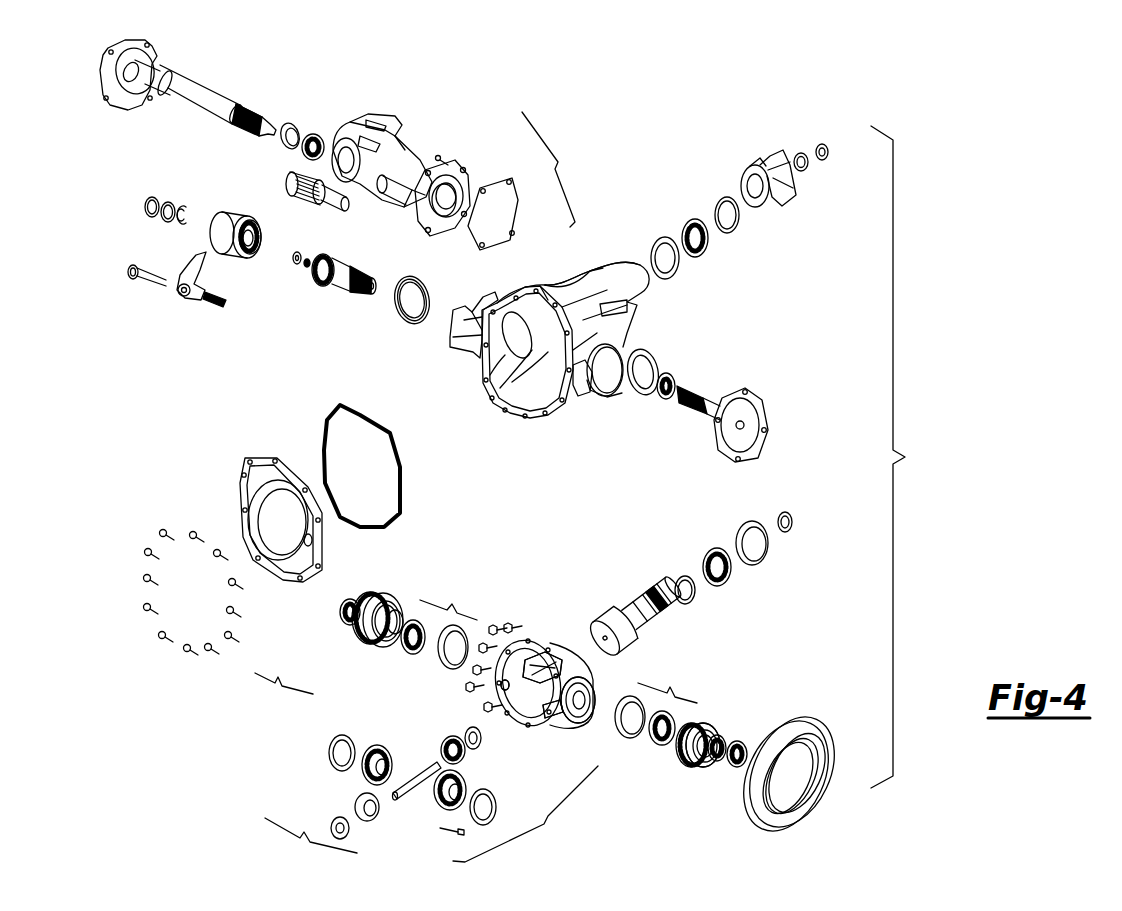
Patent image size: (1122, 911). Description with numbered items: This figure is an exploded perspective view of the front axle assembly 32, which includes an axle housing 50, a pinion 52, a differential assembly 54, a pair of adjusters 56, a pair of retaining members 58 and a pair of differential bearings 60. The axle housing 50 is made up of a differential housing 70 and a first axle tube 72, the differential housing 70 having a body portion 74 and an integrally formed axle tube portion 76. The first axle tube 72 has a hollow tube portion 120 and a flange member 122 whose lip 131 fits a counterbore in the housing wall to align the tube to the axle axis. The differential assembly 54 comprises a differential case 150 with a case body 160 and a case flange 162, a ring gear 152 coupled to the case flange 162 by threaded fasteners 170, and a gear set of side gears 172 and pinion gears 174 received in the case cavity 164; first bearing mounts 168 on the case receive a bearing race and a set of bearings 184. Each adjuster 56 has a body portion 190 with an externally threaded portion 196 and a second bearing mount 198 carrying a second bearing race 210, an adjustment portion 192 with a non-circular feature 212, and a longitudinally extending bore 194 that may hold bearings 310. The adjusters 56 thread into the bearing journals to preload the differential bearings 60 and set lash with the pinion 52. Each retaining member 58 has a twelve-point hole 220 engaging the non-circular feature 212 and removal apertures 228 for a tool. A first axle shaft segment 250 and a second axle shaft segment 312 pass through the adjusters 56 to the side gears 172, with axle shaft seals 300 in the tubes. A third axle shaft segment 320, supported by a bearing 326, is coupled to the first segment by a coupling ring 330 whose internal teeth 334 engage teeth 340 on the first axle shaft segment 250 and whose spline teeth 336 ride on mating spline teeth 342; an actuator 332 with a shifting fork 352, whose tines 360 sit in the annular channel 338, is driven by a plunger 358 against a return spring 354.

The front axle assembly 32 is at (902, 457).
The axle housing 50 is at (553, 169).
The pinion 52 is at (630, 652).
The differential assembly 54 is at (508, 708).
The adjusters 56 is at (394, 592).
The retaining members 58 is at (420, 290).
The differential bearings 60 is at (558, 660).
The differential housing 70 is at (565, 290).
The first axle tube 72 is at (422, 176).
The body portion 74 is at (606, 297).
The axle tube portion 76 is at (588, 385).
The tube portion 120 is at (390, 184).
The flange member 122 is at (458, 175).
The lip 131 is at (457, 214).
The differential case 150 is at (567, 660).
The ring gear 152 is at (816, 732).
The case body 160 is at (540, 714).
The case flange 162 is at (545, 642).
The case cavity 164 is at (503, 686).
The first bearing mounts 168 is at (587, 712).
The threaded fasteners 170 is at (505, 622).
The side gears 172 is at (364, 776).
The pinion gears 174 is at (356, 805).
The bearings 184 is at (380, 798).
The body portion 190 is at (281, 692).
The adjustment portion 192 is at (706, 780).
The longitudinally extending bore 194 is at (396, 642).
The externally threaded portion 196 is at (366, 628).
The second bearing mount 198 is at (378, 632).
The second bearing race 210 is at (440, 657).
The non-circular feature 212 is at (711, 734).
The twelve-point hole 220 is at (643, 394).
The removal apertures 228 is at (416, 322).
The first axle shaft segment 250 is at (346, 290).
The axle shaft seals 300 is at (286, 122).
The bearings 310 is at (338, 615).
The second axle shaft segment 312 is at (706, 406).
The third axle shaft segment 320 is at (217, 100).
The bearing 326 is at (312, 134).
The coupling ring 330 is at (224, 208).
The actuator 332 is at (290, 180).
The internal teeth 334 is at (262, 236).
The spline teeth 336 is at (252, 250).
The annular channel 338 is at (225, 238).
The teeth 340 is at (312, 284).
The mating spline teeth 342 is at (238, 128).
The shifting fork 352 is at (153, 299).
The return spring 354 is at (218, 306).
The plunger 358 is at (135, 276).
The tines 360 is at (196, 256).